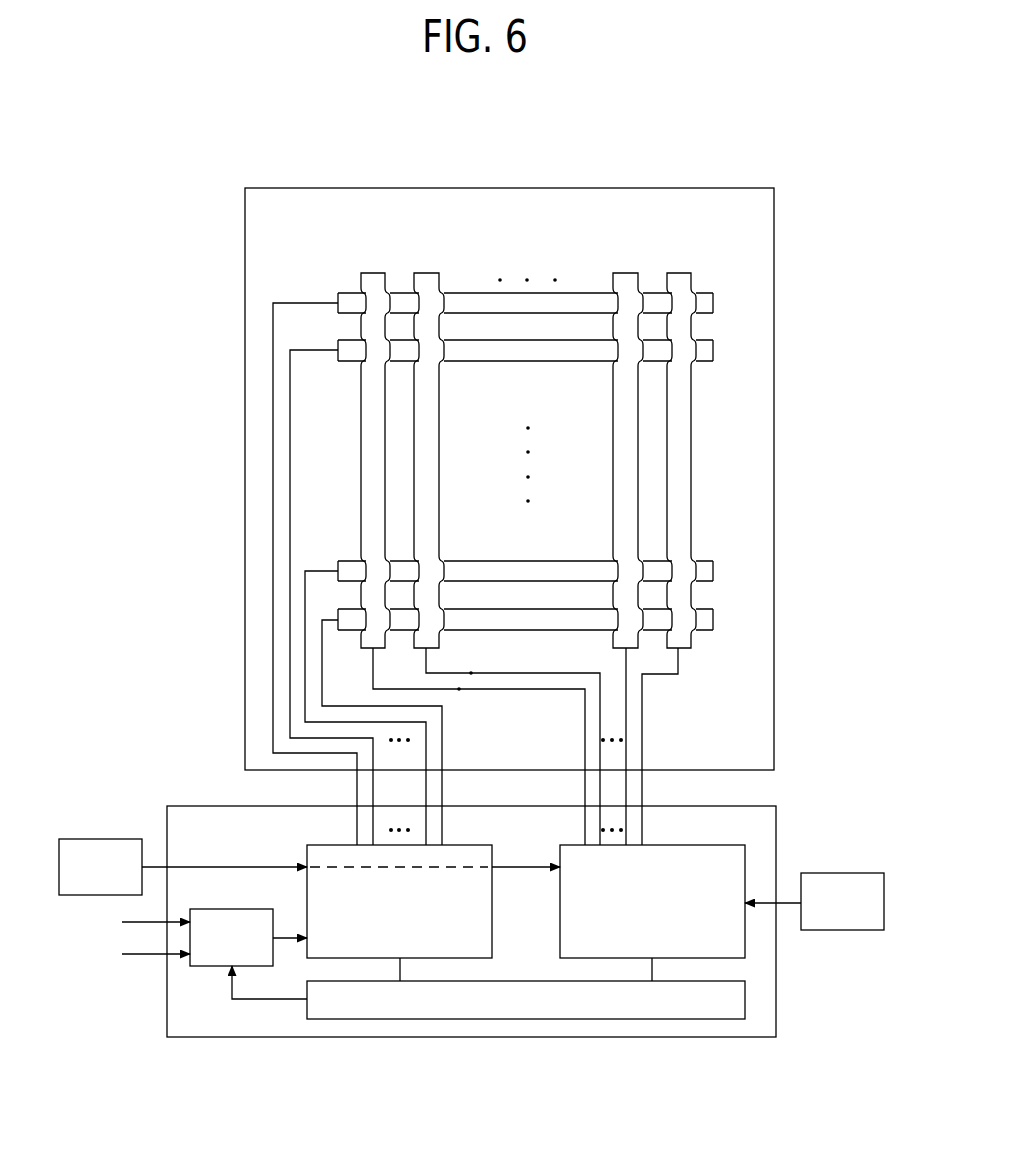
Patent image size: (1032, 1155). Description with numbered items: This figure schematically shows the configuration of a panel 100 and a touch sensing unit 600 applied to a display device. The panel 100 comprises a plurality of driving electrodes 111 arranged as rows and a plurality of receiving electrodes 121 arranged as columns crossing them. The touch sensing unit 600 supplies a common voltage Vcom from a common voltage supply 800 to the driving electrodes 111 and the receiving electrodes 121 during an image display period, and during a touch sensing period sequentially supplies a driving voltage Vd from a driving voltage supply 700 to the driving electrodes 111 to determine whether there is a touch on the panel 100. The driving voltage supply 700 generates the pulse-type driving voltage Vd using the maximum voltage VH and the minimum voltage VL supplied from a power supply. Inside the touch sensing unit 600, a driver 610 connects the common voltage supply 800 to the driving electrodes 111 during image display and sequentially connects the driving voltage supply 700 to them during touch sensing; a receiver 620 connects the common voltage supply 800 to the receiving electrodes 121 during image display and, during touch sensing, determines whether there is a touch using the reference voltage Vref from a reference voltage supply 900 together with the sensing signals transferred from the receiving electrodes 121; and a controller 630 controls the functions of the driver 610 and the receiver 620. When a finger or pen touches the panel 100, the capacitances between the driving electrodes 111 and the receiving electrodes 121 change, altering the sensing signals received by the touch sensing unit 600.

The panel 100 is at (548, 516).
The driving electrodes 111 is at (714, 293).
The receiving electrodes 121 is at (672, 273).
The touch sensing unit 600 is at (473, 921).
The driver 610 is at (384, 910).
The receiver 620 is at (636, 910).
The controller 630 is at (511, 1010).
The driving voltage supply 700 is at (215, 947).
The common voltage supply 800 is at (84, 876).
The reference voltage supply 900 is at (826, 910).